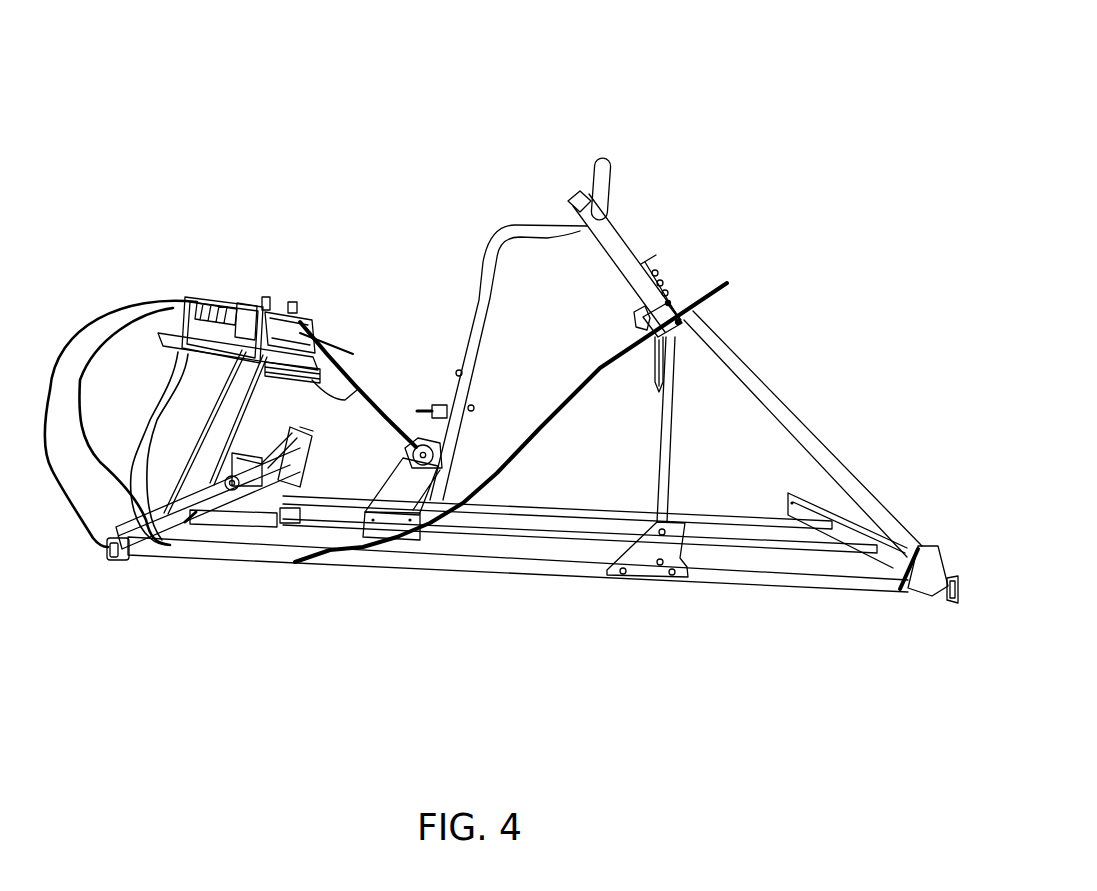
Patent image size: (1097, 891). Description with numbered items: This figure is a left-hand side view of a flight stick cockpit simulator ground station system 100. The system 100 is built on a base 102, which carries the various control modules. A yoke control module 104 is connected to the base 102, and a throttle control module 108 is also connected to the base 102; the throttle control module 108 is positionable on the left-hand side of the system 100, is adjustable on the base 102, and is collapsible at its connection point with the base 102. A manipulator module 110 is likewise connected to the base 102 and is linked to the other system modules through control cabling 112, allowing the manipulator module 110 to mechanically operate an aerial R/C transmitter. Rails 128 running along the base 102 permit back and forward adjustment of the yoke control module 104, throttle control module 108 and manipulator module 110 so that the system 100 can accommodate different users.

The flight stick cockpit simulator ground station system 100 is at (855, 65).
The base 102 is at (130, 561).
The yoke control module 104 is at (603, 162).
The throttle control module 108 is at (628, 258).
The manipulator module 110 is at (167, 332).
The control cabling 112 is at (90, 320).
The rails 128 is at (530, 576).